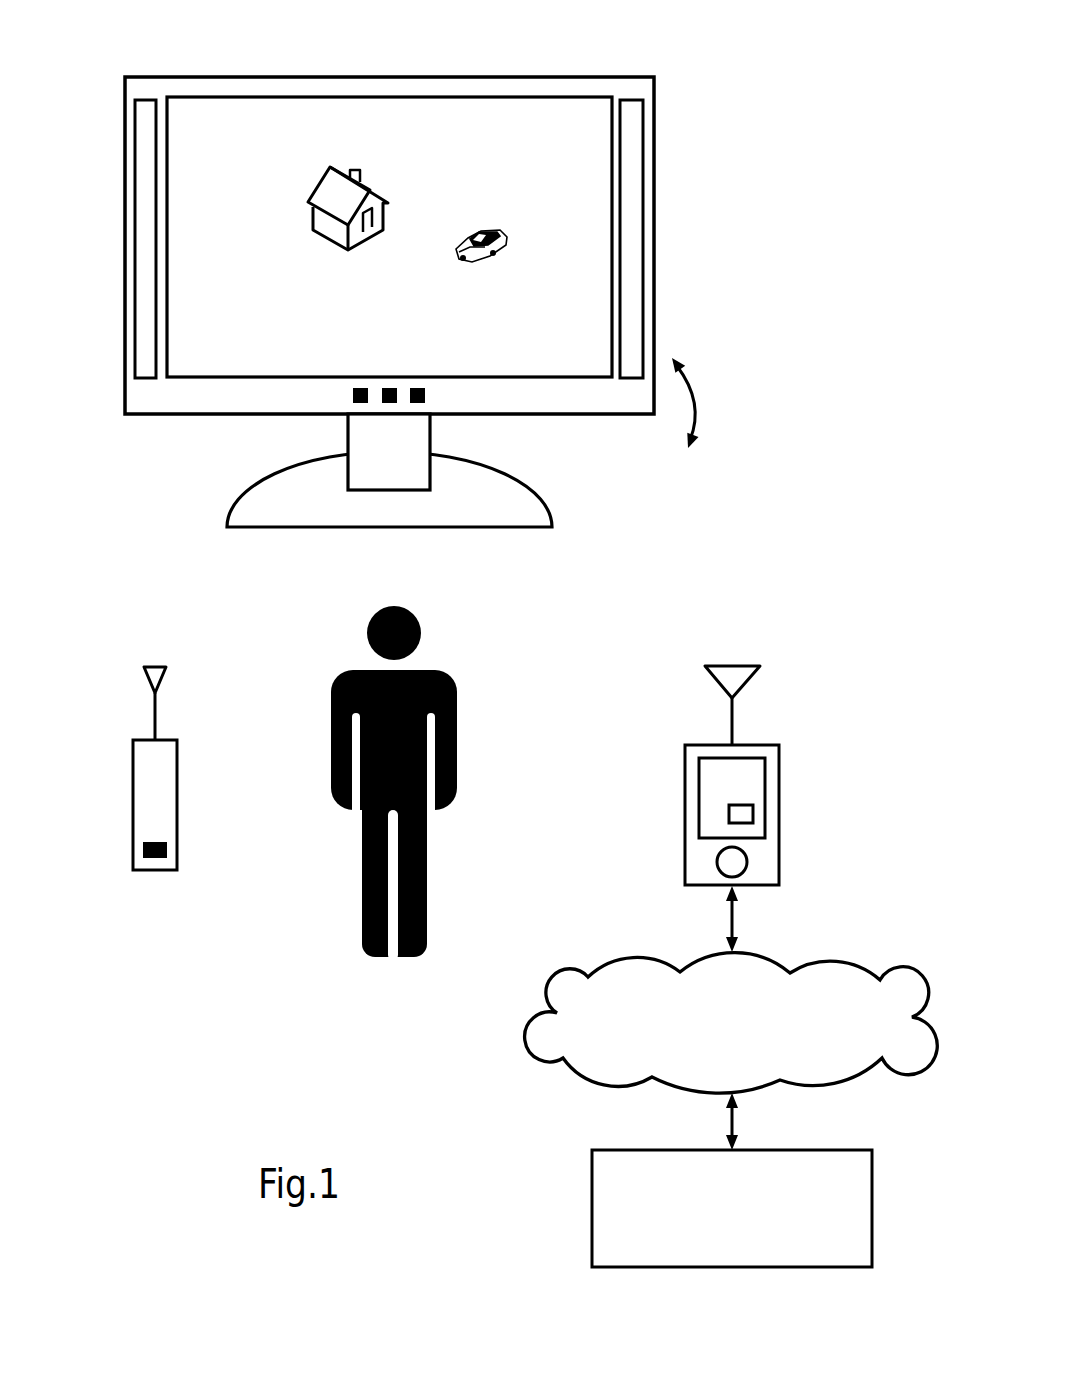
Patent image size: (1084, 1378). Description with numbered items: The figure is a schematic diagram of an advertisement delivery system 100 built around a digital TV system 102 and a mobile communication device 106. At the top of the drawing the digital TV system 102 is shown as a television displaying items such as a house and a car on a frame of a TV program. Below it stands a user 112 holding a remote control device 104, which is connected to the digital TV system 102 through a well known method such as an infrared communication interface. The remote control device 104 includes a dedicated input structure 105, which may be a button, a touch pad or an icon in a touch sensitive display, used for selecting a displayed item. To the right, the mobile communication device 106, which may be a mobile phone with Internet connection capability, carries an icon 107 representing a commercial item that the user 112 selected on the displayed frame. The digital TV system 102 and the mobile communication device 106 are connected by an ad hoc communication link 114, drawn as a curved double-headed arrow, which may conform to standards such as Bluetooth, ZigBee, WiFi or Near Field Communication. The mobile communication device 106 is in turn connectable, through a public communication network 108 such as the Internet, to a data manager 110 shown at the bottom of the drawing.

The system 100 is at (697, 86).
The digital TV system 102 is at (550, 40).
The remote control device 104 is at (176, 802).
The dedicated input structure 105 is at (155, 858).
The mobile communication device 106 is at (754, 740).
The icon 107 is at (753, 812).
The public communication network 108 is at (731, 1023).
The data manager 110 is at (732, 1208).
The user 112 is at (425, 783).
The ad hoc communication link 114 is at (774, 403).